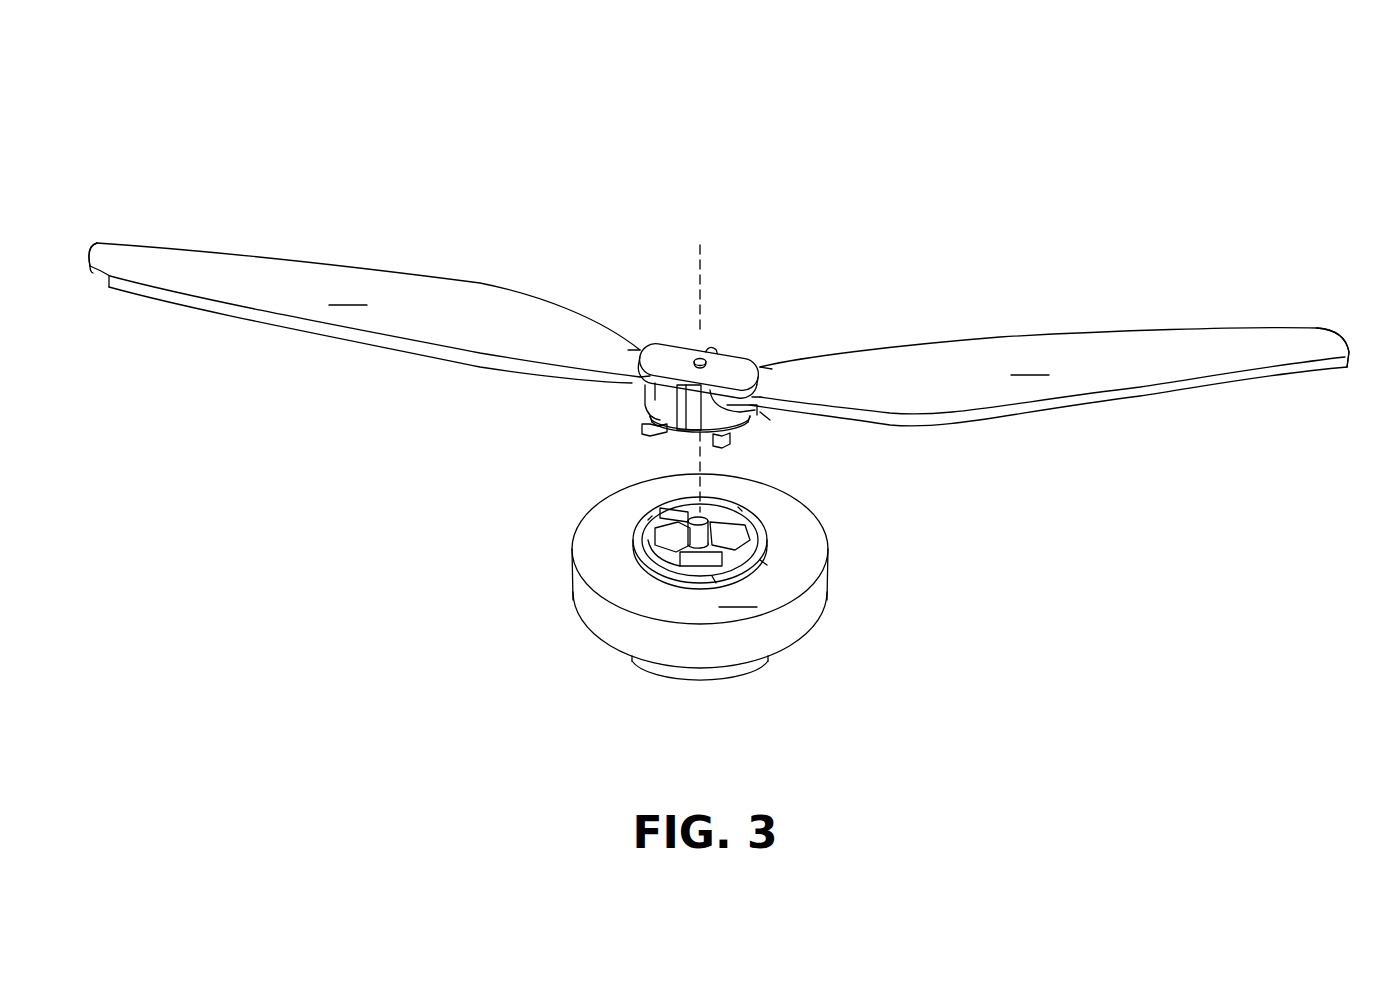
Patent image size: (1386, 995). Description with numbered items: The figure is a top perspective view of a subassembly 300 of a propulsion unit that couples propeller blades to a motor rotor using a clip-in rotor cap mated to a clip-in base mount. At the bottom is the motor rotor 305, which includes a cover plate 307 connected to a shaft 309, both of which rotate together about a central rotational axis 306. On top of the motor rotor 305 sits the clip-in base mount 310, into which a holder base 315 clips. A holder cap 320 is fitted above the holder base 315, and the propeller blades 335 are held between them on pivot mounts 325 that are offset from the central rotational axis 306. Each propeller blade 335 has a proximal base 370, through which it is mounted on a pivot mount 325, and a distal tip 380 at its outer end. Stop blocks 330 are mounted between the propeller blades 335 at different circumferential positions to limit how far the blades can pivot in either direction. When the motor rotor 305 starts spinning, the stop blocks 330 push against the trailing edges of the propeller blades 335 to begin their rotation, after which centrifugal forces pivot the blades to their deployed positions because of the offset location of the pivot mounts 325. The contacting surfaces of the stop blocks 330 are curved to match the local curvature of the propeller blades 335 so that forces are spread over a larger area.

The subassembly 300 is at (1053, 105).
The motor rotor 305 is at (562, 679).
The central rotational axis 306 is at (704, 248).
The cover plate 307 is at (700, 553).
The shaft 309 is at (697, 532).
The clip-in base mount 310 is at (610, 522).
The holder base 315 is at (749, 445).
The holder cap 320 is at (729, 364).
The pivot mount 325 is at (650, 329).
The stop block 330 is at (682, 417).
The propeller blade 335 is at (719, 334).
The proximal base 370 is at (630, 401).
The distal tip 380 is at (108, 245).